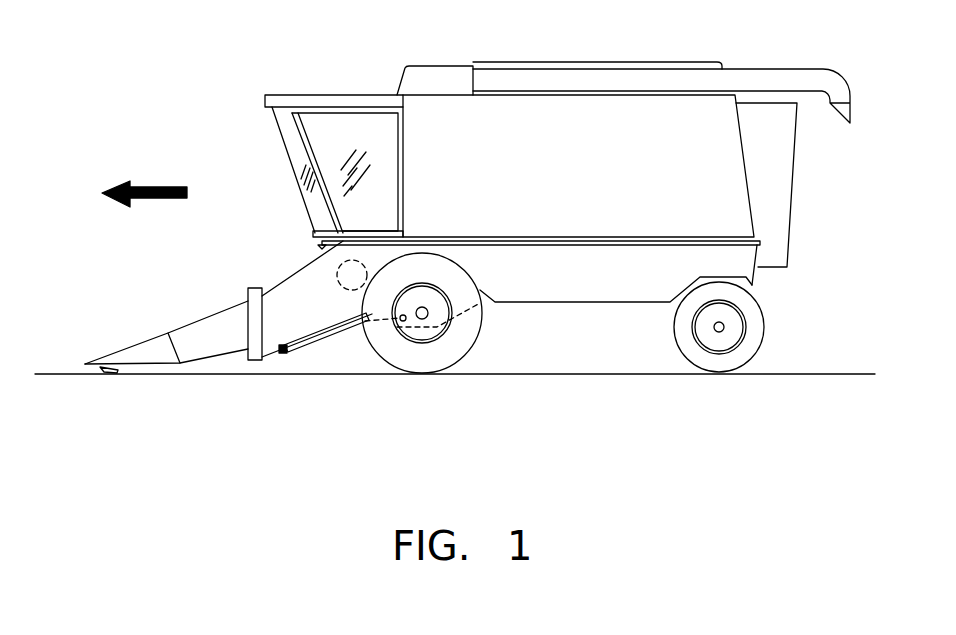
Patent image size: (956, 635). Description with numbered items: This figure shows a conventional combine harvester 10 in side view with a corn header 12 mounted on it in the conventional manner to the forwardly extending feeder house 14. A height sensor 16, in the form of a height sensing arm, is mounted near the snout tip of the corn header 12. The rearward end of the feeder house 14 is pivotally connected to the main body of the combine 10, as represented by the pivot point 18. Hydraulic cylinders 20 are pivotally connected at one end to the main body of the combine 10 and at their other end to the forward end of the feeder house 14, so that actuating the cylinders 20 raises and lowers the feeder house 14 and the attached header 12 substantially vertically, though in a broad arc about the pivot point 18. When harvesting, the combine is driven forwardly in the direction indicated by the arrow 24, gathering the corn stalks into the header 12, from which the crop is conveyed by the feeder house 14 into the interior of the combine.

The combine harvester 10 is at (250, 63).
The corn header 12 is at (193, 322).
The feeder house 14 is at (290, 280).
The height sensor 16 is at (113, 383).
The pivot point 18 is at (362, 290).
The hydraulic cylinders 20 is at (327, 340).
The arrow 24 is at (165, 185).